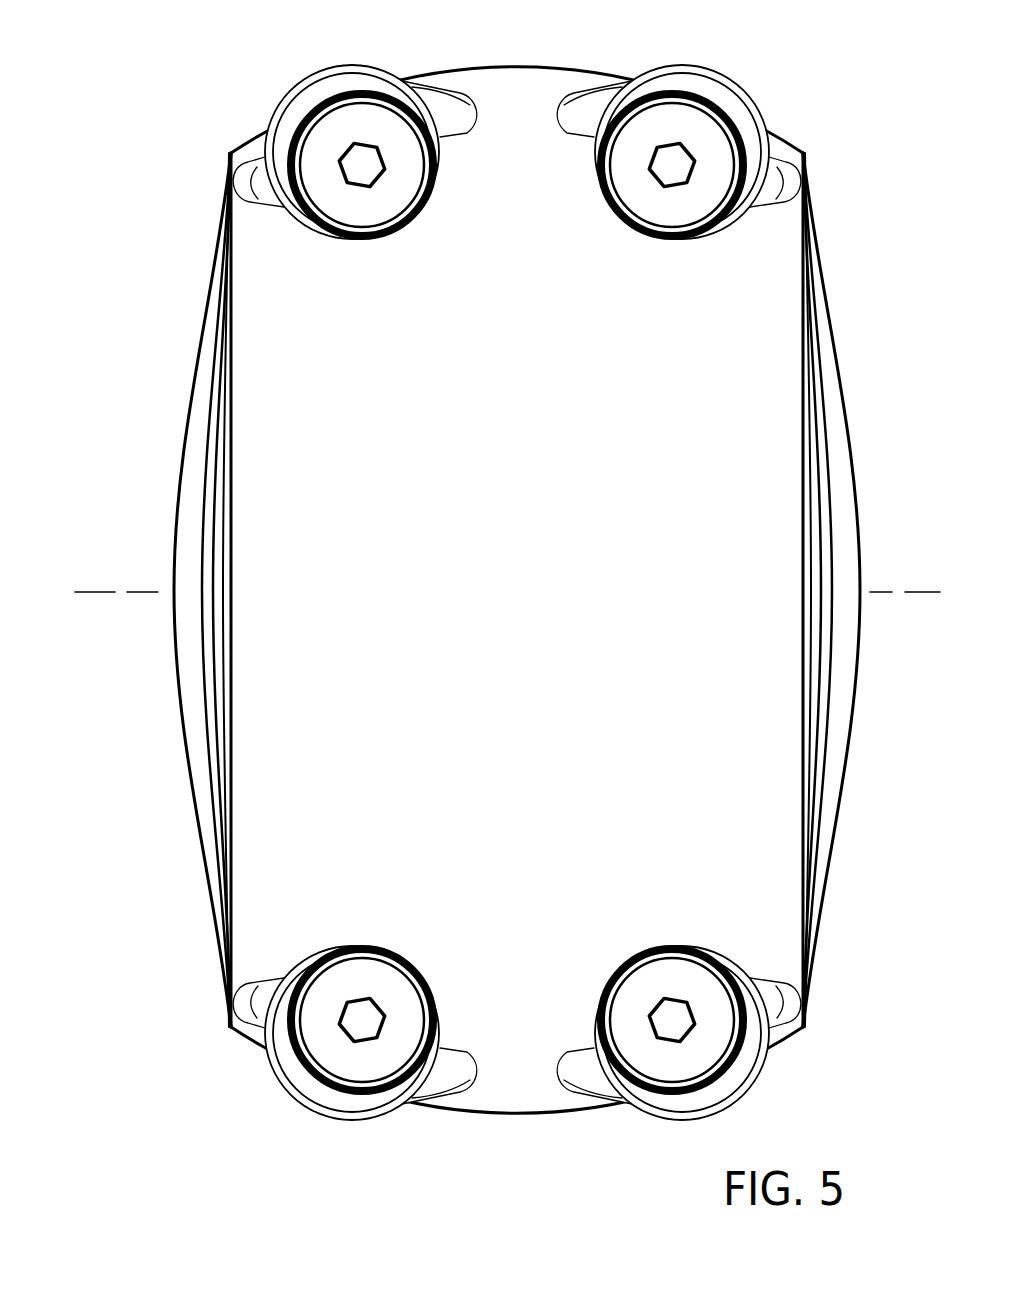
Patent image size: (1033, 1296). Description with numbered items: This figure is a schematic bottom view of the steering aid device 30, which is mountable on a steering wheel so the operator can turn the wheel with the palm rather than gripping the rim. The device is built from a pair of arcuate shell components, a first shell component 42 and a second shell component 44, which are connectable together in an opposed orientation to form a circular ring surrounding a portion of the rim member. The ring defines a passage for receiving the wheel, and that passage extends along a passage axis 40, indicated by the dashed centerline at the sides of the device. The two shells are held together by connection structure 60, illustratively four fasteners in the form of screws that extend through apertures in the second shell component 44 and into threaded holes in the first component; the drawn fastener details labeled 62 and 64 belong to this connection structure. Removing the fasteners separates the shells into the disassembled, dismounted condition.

The steering aid device 30 is at (486, 567).
The passage axis 40 is at (486, 590).
The first shell component 42 is at (172, 640).
The second shell component 44 is at (270, 780).
The connection structure 60 is at (706, 127).
The bolt head 62 is at (725, 128).
The washer 64 is at (702, 1072).